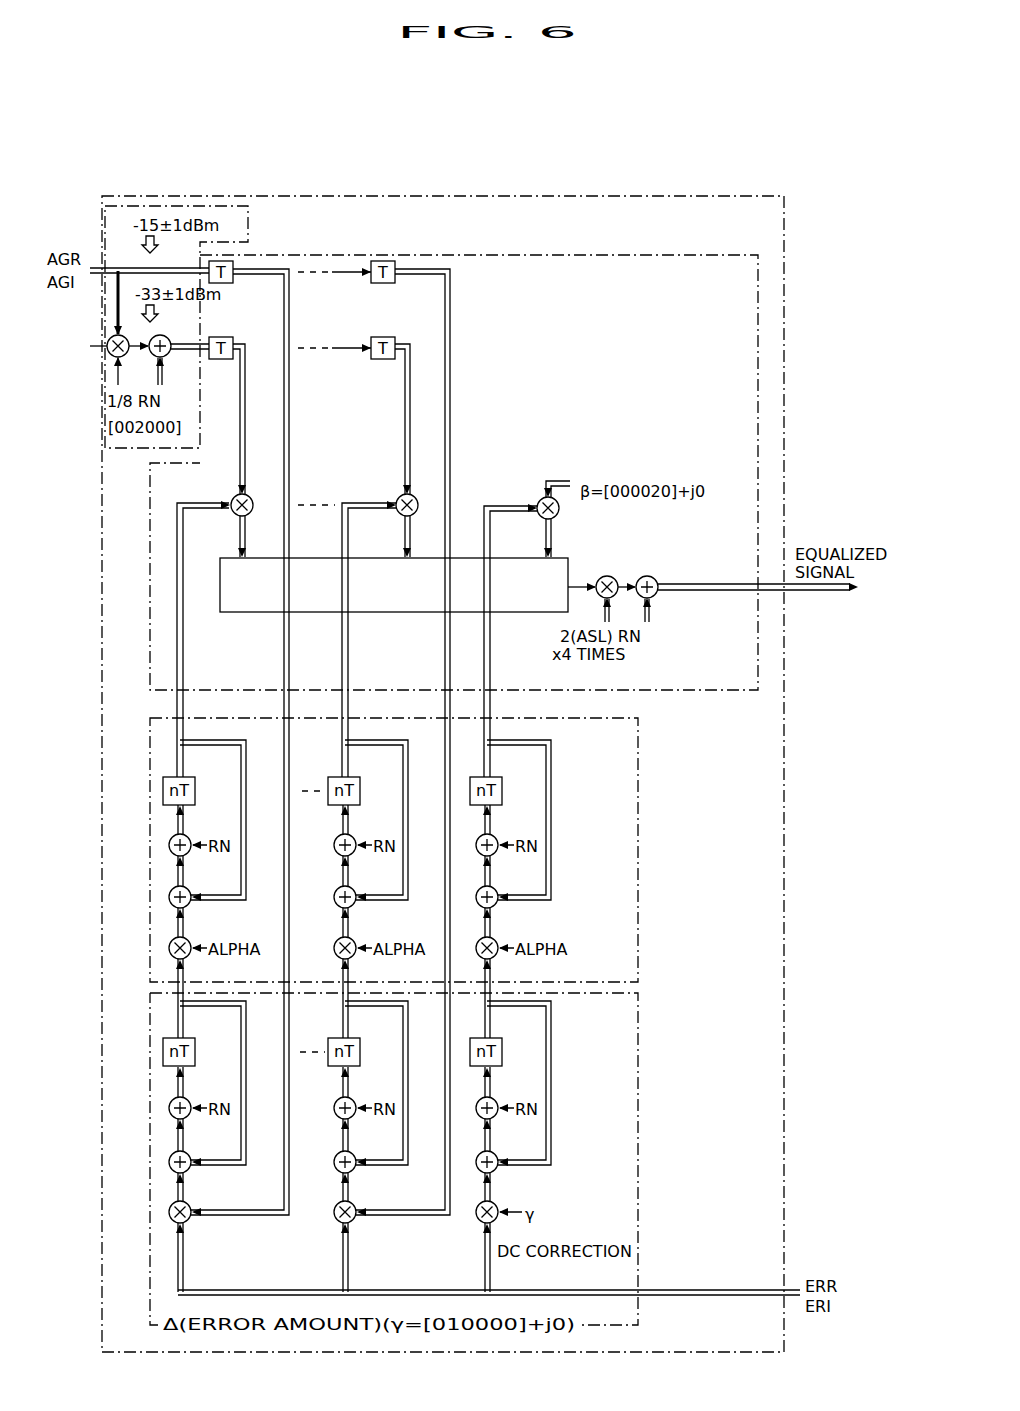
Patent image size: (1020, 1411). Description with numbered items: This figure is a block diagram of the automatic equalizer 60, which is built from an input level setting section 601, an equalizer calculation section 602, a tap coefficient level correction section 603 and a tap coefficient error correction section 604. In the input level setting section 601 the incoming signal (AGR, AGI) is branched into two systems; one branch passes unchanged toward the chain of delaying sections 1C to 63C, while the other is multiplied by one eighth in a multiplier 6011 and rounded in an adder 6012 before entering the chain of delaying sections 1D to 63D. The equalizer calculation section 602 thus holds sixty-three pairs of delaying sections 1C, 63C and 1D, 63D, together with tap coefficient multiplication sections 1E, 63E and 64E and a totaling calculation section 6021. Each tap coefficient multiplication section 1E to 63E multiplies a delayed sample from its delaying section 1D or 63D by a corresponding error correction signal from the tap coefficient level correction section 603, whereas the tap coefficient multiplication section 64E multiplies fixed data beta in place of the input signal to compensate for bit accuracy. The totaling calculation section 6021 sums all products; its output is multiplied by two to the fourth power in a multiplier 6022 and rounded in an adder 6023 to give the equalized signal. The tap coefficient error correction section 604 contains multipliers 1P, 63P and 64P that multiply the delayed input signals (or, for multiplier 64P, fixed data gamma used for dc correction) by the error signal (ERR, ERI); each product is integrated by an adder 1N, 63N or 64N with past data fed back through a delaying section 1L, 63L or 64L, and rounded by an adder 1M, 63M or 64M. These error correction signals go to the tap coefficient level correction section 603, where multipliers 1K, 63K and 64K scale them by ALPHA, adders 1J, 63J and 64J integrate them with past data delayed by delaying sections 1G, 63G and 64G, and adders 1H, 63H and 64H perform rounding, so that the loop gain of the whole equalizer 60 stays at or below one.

The automatic equalizer 60 is at (333, 196).
The input level setting section 601 is at (125, 450).
The multiplier 6011 is at (107, 343).
The adder 6012 is at (172, 356).
The equalizer calculation section 602 is at (758, 392).
The totaling calculation section 6021 is at (260, 612).
The multiplier 6022 is at (607, 576).
The adder 6023 is at (658, 592).
The tap coefficient level correction section 603 is at (638, 797).
The tap coefficient error correction section 604 is at (638, 1087).
The delaying section 1C is at (236, 266).
The delaying section 1D is at (233, 342).
The tap coefficient multiplication section 1E is at (249, 496).
The delaying section 1G is at (195, 786).
The adder 1H is at (191, 839).
The adder 1J is at (191, 892).
The multiplier 1K is at (191, 943).
The delaying section 1L is at (195, 1049).
The adder 1M is at (191, 1102).
The adder 1N is at (191, 1157).
The multiplier 1P is at (191, 1207).
The delaying section 63C is at (385, 261).
The delaying section 63D is at (385, 337).
The tap coefficient multiplication section 63E is at (400, 497).
The delaying section 63G is at (358, 786).
The adder 63H is at (335, 840).
The adder 63J is at (335, 893).
The multiplier 63K is at (356, 943).
The delaying section 63L is at (358, 1049).
The adder 63M is at (335, 1102).
The adder 63N is at (356, 1170).
The multiplier 63P is at (335, 1220).
The tap coefficient multiplication section 64E is at (540, 500).
The delaying section 64G is at (500, 786).
The adder 64H is at (498, 838).
The adder 64J is at (510, 886).
The multiplier 64K is at (498, 943).
The delaying section 64L is at (500, 1049).
The adder 64M is at (498, 1101).
The adder 64N is at (498, 1170).
The multiplier 64P is at (478, 1220).